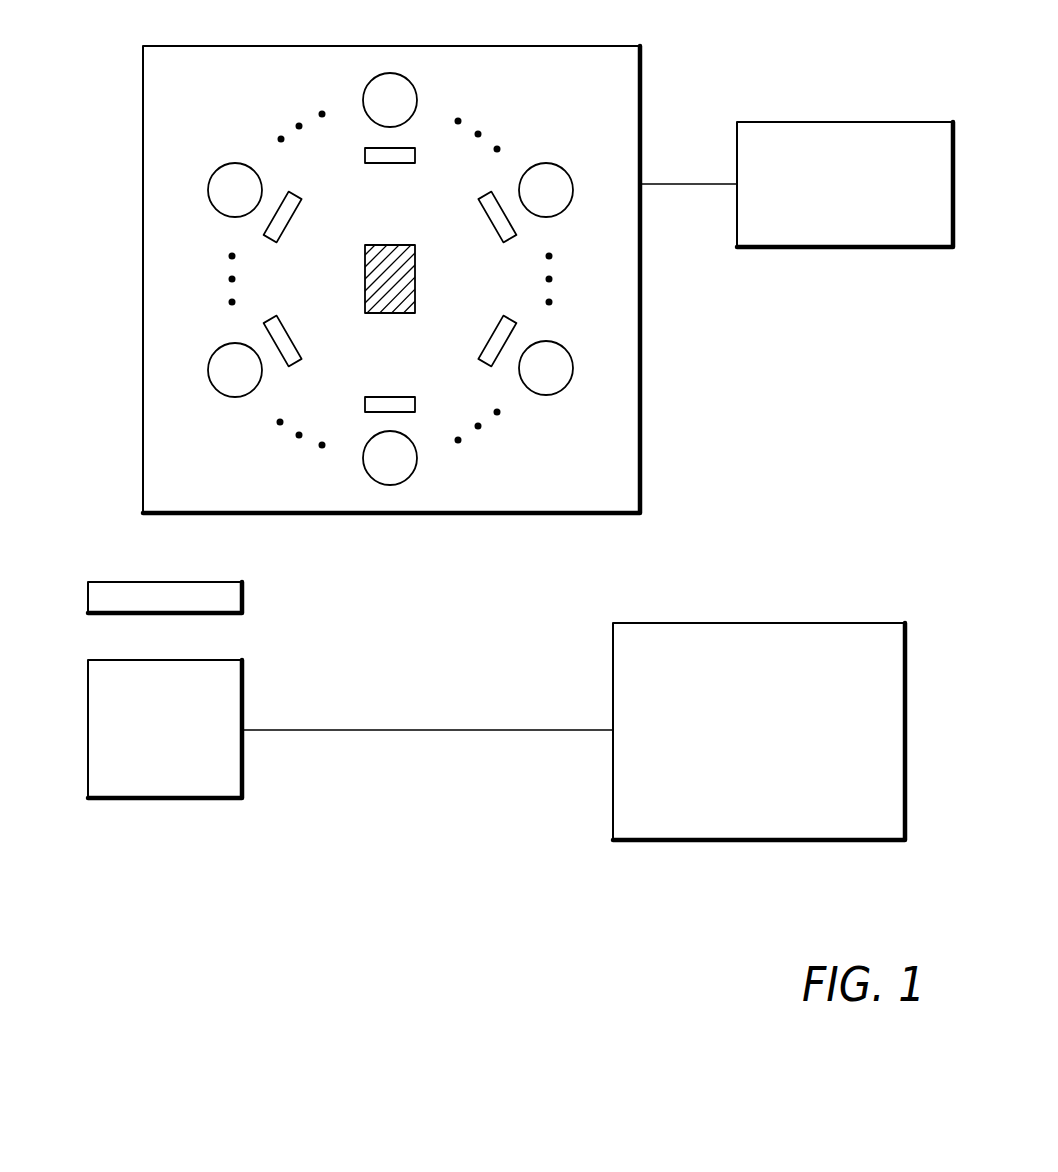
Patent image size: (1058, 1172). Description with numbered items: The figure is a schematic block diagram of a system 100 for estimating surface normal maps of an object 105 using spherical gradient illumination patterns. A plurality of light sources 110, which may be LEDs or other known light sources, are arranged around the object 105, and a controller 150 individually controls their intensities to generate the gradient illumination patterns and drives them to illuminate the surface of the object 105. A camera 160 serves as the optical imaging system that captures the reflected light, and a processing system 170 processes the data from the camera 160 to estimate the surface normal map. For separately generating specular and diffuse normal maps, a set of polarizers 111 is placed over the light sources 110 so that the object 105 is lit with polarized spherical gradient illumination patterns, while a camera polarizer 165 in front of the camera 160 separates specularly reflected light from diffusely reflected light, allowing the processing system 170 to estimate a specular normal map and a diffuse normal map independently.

The system 100 is at (404, 853).
The object 105 is at (384, 245).
The light sources 110 is at (232, 164).
The polarizers 111 is at (288, 222).
The controller 150 is at (860, 122).
The camera 160 is at (88, 763).
The camera polarizer 165 is at (210, 582).
The processing system 170 is at (845, 623).